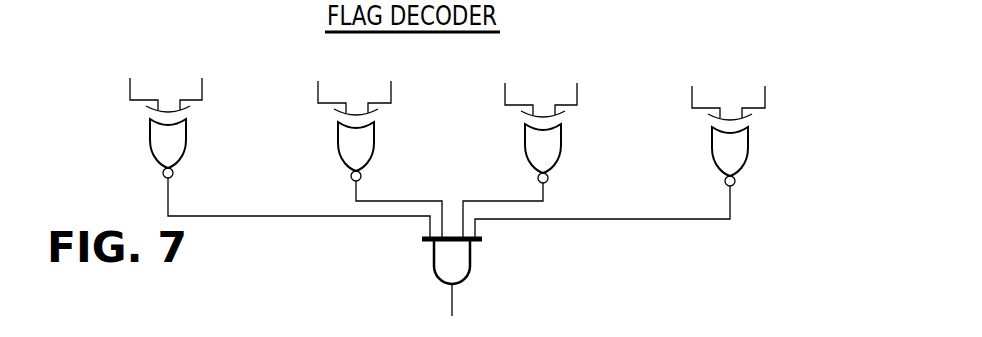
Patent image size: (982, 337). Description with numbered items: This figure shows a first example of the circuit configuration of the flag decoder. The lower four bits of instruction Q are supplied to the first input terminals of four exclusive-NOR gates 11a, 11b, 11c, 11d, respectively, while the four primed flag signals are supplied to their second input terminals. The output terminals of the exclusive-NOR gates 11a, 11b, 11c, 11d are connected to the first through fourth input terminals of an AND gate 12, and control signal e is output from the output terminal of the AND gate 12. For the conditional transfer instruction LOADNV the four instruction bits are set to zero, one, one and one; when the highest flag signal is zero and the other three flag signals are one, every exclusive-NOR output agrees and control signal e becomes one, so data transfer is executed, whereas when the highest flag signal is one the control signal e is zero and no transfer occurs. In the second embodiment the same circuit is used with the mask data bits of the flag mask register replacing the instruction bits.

The exclusive-NOR gate 11a is at (184, 134).
The exclusive-NOR gate 11b is at (337, 140).
The exclusive-NOR gate 11c is at (527, 142).
The exclusive-NOR gate 11d is at (715, 145).
The AND gate 12 is at (442, 252).